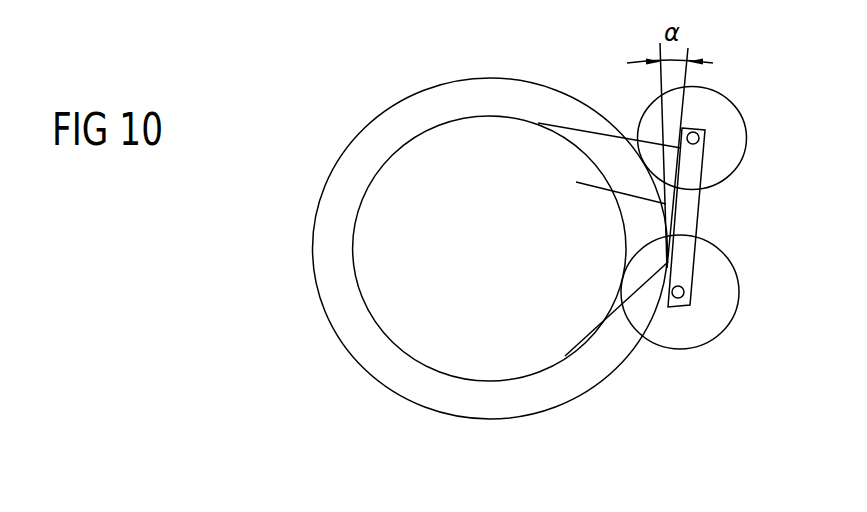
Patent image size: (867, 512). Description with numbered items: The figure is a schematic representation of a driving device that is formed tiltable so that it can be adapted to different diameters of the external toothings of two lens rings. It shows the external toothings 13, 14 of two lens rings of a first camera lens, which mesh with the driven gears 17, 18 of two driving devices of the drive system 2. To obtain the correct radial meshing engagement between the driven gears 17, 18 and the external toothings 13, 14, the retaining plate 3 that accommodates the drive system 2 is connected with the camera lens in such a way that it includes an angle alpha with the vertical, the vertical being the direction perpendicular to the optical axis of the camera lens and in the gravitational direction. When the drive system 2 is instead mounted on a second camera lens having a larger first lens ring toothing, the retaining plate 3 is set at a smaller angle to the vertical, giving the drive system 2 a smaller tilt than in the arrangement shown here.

The external toothing 14 is at (434, 86).
The external toothing 13 is at (490, 381).
The retaining plate 3 is at (609, 239).
The drive system 2 is at (690, 206).
The driven gear 17 is at (720, 105).
The driven gear 18 is at (718, 318).